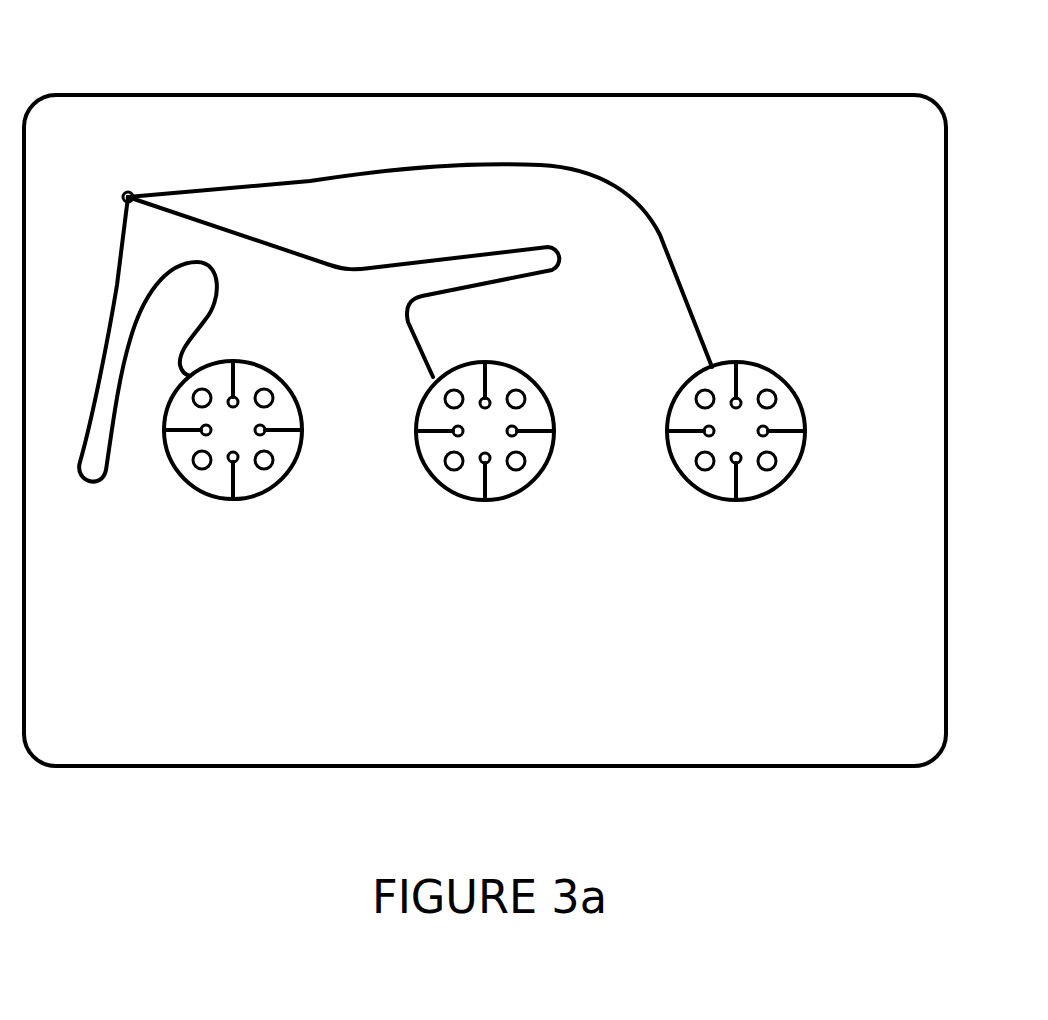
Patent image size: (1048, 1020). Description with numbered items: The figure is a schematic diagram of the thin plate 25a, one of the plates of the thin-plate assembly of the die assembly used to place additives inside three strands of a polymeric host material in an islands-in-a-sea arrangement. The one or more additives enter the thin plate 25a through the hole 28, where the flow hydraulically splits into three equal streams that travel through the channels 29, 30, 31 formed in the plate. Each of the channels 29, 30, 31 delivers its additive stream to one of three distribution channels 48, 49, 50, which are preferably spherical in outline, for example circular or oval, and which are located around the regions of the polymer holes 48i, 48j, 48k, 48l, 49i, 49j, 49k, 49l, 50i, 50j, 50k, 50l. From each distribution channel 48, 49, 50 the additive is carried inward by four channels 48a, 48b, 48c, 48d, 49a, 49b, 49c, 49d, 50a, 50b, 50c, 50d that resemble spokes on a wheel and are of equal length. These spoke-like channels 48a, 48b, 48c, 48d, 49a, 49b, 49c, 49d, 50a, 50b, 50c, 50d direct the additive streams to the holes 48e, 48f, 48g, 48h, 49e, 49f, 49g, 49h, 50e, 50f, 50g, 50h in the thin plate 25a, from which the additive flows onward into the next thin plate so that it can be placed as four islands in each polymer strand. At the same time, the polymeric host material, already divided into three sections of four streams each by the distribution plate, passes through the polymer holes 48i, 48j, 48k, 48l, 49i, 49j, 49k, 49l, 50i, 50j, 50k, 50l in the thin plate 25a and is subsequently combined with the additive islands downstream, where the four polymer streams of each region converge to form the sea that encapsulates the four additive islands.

The thin plate 25a is at (922, 93).
The hole 28 is at (134, 191).
The channel 29 is at (112, 302).
The channel 30 is at (413, 297).
The channel 31 is at (613, 185).
The distribution channel 48 is at (236, 443).
The channel 48a is at (239, 357).
The channel 48b is at (314, 416).
The channel 48c is at (245, 515).
The channel 48d is at (155, 461).
The hole 48e is at (275, 370).
The hole 48f is at (307, 449).
The hole 48g is at (265, 497).
The hole 48h is at (176, 475).
The polymer hole 48i is at (298, 385).
The polymer hole 48j is at (294, 486).
The polymer hole 48k is at (202, 500).
The polymer hole 48l is at (161, 420).
The distribution channel 49 is at (488, 444).
The channel 49a is at (491, 358).
The channel 49b is at (566, 417).
The channel 49c is at (497, 516).
The channel 49d is at (407, 462).
The hole 49e is at (527, 371).
The hole 49f is at (559, 450).
The hole 49g is at (517, 498).
The hole 49h is at (428, 476).
The polymer hole 49i is at (550, 386).
The polymer hole 49j is at (546, 487).
The polymer hole 49k is at (454, 501).
The polymer hole 49l is at (413, 421).
The distribution channel 50 is at (739, 444).
The channel 50a is at (742, 358).
The channel 50b is at (817, 417).
The channel 50c is at (748, 516).
The channel 50d is at (658, 462).
The hole 50e is at (778, 371).
The hole 50f is at (810, 450).
The hole 50g is at (768, 498).
The hole 50h is at (679, 476).
The polymer hole 50i is at (801, 386).
The polymer hole 50j is at (797, 487).
The polymer hole 50k is at (705, 501).
The polymer hole 50l is at (664, 421).